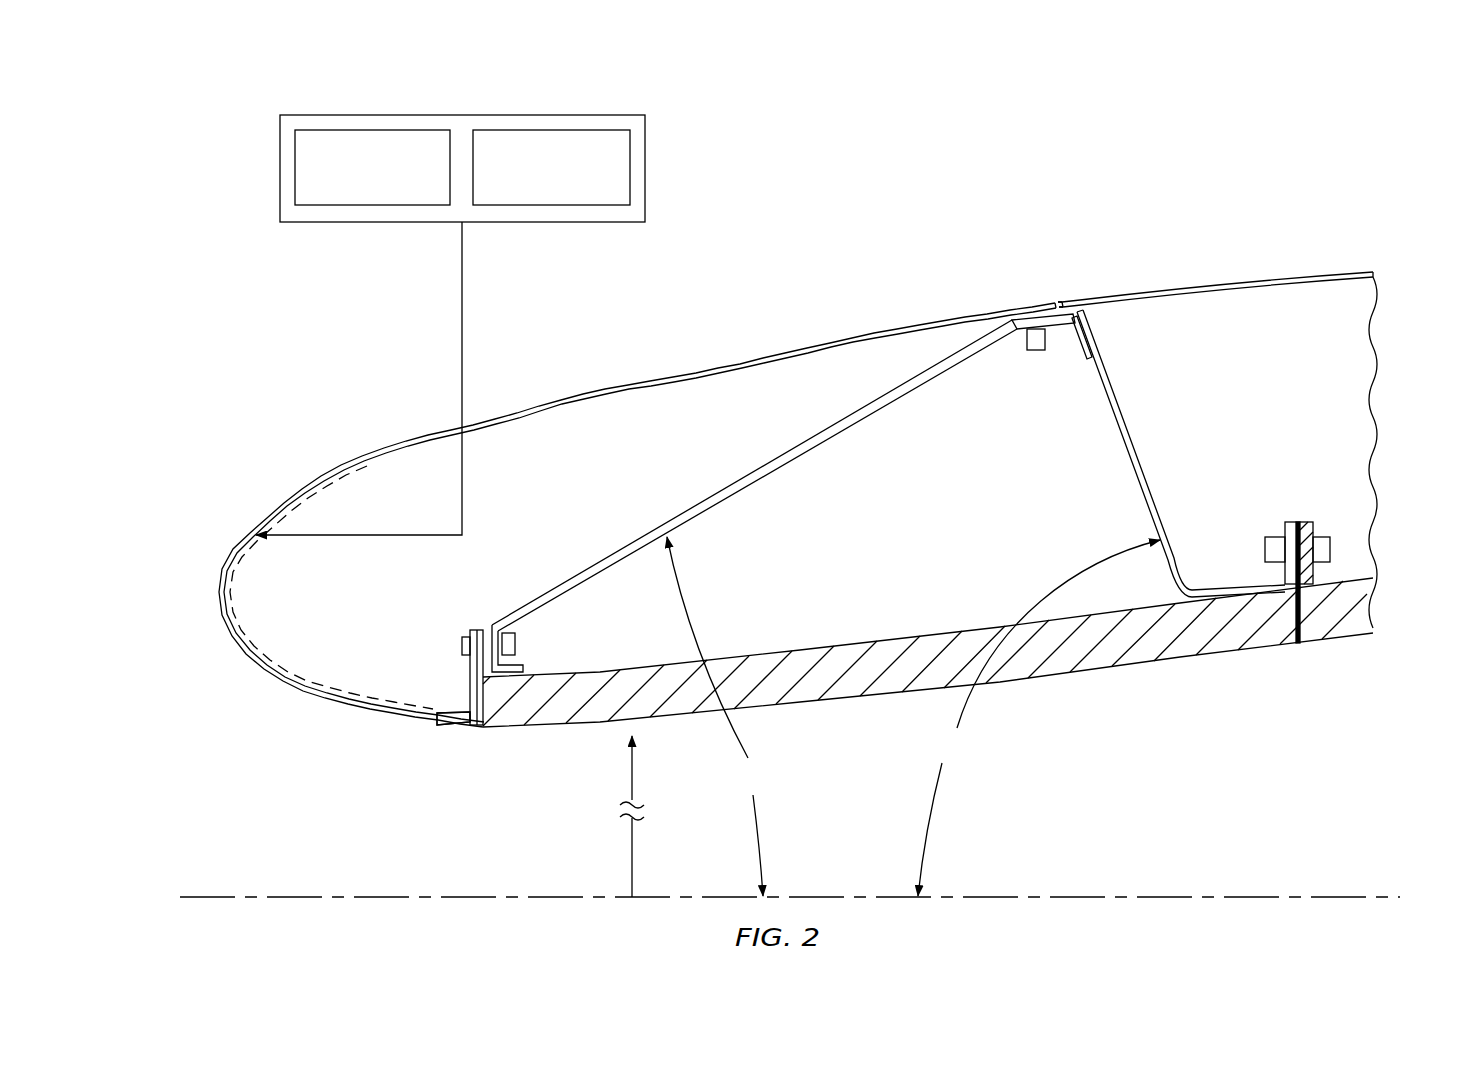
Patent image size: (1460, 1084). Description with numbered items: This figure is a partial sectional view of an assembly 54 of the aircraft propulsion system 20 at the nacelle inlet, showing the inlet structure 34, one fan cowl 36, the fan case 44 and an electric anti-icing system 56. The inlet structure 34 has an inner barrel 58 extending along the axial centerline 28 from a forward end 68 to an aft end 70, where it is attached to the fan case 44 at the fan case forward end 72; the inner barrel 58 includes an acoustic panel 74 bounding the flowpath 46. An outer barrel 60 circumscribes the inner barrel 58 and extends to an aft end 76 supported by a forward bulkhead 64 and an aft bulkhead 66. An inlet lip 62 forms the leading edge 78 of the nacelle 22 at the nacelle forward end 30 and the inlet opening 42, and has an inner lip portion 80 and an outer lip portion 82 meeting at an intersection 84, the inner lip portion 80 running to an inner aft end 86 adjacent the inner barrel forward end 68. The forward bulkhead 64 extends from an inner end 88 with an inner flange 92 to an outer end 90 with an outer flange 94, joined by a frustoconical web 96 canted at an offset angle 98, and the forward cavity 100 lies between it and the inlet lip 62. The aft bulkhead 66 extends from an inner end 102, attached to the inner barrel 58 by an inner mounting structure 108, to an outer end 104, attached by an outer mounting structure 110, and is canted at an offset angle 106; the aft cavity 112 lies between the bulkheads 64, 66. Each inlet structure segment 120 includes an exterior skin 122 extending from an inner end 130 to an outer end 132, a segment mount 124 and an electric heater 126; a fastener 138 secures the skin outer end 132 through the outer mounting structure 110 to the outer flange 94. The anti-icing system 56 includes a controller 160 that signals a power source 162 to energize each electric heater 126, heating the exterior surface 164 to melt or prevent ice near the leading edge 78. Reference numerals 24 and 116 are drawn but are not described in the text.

The aircraft propulsion system 20 is at (175, 120).
The nacelle 22 is at (898, 216).
The wing 24 is at (925, 168).
The axial centerline 28 is at (1390, 895).
The nacelle forward end 30 is at (219, 590).
The inlet structure 34 is at (235, 398).
The fan cowl 36 is at (1240, 270).
The inlet opening 42 is at (225, 804).
The fan case 44 is at (1375, 603).
The flowpath 46 is at (562, 852).
The assembly 54 is at (245, 140).
The electric anti-icing system 56 is at (668, 146).
The inner barrel 58 is at (850, 706).
The outer barrel 60 is at (822, 334).
The inlet lip 62 is at (247, 672).
The forward bulkhead 64 is at (720, 489).
The aft bulkhead 66 is at (1150, 436).
The forward end of the inner barrel 68 is at (490, 724).
The aft end of the inner barrel 70 is at (1297, 642).
The forward end of the fan case 72 is at (1312, 642).
The acoustic panel 74 is at (839, 755).
The aft end of the outer barrel 76 is at (1058, 300).
The leading edge 78 is at (149, 598).
The inner lip portion 80 is at (333, 701).
The outer lip portion 82 is at (333, 478).
The intersection 84 is at (149, 598).
The inner aft end of the inlet lip 86 is at (465, 722).
The inner end of the forward bulkhead 88 is at (505, 666).
The outer end of the forward bulkhead 90 is at (1082, 304).
The forward bulkhead inner flange 92 is at (516, 640).
The forward bulkhead outer flange 94 is at (1045, 351).
The forward bulkhead web 96 is at (768, 478).
The forward bulkhead offset angle 98 is at (715, 716).
The forward internal cavity 100 is at (560, 517).
The inner end of the aft bulkhead 102 is at (1196, 578).
The outer end of the aft bulkhead 104 is at (1093, 320).
The aft bulkhead offset angle 106 is at (1039, 718).
The inner mounting structure 108 is at (1235, 583).
The outer mounting structure 110 is at (1090, 352).
The aft internal cavity 112 is at (963, 517).
The aft cavity 116 is at (1318, 420).
The inlet structure segment 120 is at (570, 390).
The segment exterior skin 122 is at (628, 381).
The segment mount 124 is at (468, 690).
The electric heater 126 is at (268, 652).
The longitudinal inner end of the exterior skin 130 is at (424, 742).
The longitudinal outer end of the exterior skin 132 is at (1016, 265).
The fastener 138 is at (1018, 332).
The controller 160 is at (531, 192).
The electrical power source 162 is at (352, 192).
The exterior surface 164 is at (226, 630).